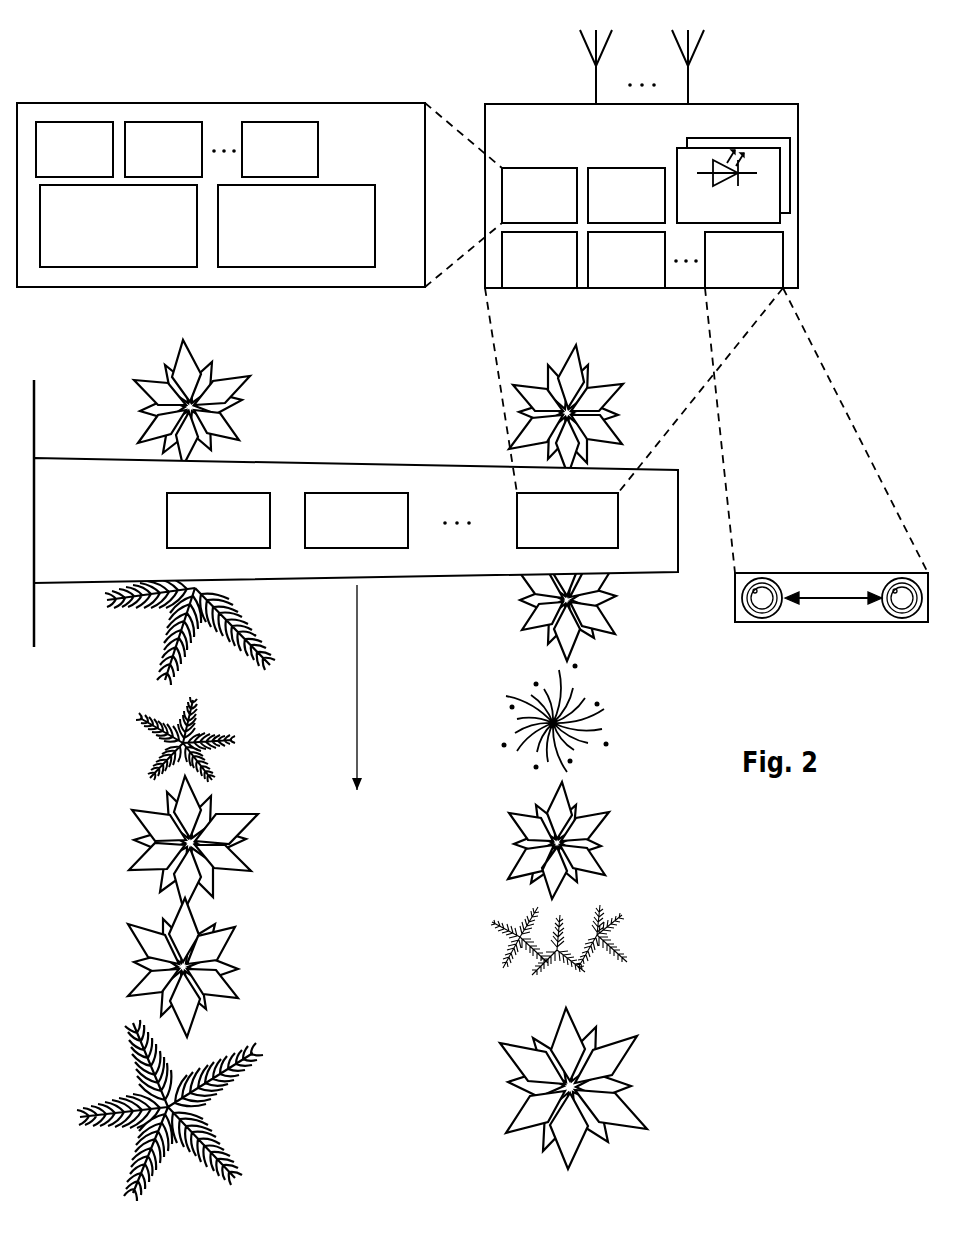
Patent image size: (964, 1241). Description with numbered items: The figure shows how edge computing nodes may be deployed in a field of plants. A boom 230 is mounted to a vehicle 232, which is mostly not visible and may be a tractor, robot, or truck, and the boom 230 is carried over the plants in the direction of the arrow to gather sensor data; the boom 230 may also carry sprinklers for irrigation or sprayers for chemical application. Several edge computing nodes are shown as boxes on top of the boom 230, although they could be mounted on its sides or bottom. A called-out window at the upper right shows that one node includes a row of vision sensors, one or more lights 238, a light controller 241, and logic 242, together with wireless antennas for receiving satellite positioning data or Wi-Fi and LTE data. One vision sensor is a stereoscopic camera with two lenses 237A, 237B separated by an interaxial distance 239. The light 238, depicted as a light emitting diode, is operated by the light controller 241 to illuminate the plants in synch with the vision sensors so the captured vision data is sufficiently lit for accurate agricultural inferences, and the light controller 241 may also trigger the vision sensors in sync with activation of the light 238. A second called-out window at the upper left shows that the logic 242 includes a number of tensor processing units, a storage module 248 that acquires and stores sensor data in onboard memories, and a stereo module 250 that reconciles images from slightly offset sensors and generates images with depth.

The boom 230 is at (365, 458).
The vehicle 232 is at (34, 423).
The lens 237A is at (770, 622).
The lens 237B is at (905, 622).
The light 238 is at (733, 180).
The interaxial distance 239 is at (817, 598).
The light controller 241 is at (626, 195).
The logic 242 is at (372, 103).
The storage module 248 is at (118, 226).
The stereo module 250 is at (296, 226).